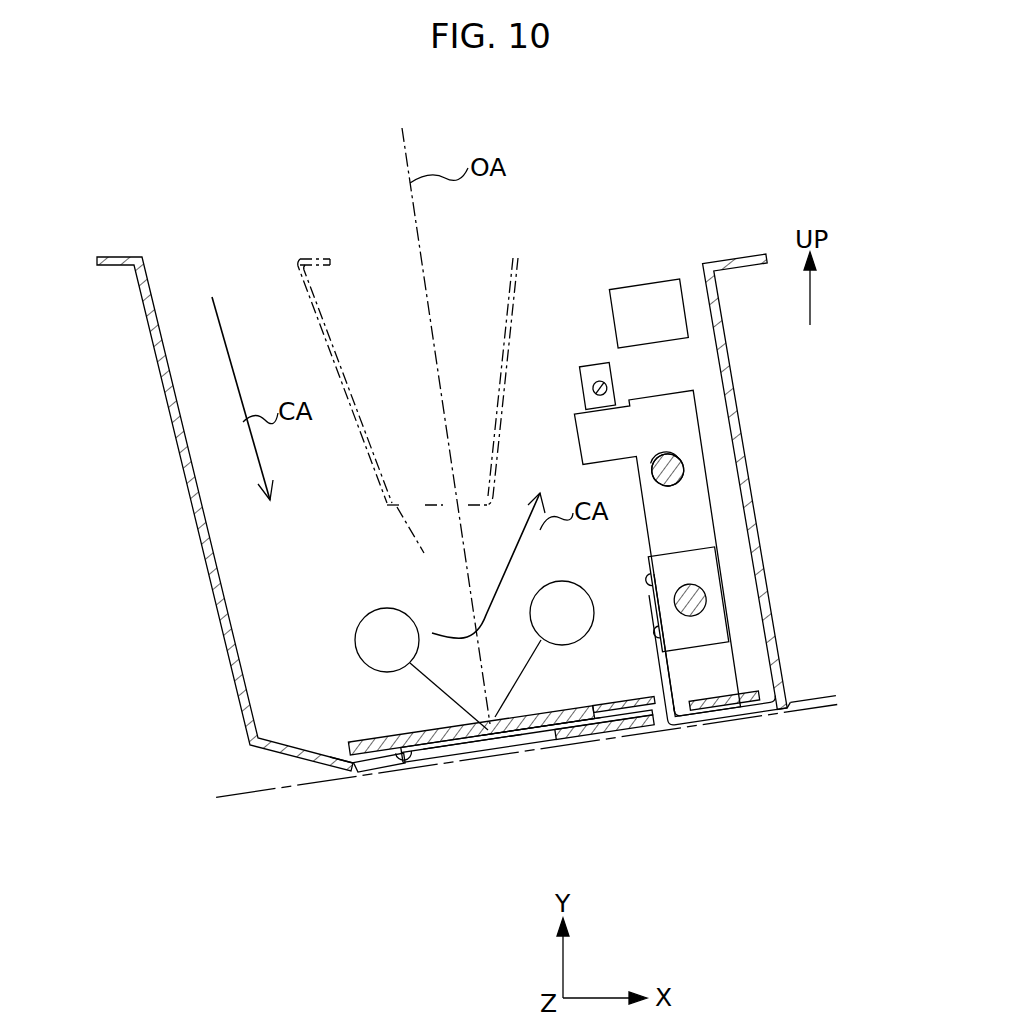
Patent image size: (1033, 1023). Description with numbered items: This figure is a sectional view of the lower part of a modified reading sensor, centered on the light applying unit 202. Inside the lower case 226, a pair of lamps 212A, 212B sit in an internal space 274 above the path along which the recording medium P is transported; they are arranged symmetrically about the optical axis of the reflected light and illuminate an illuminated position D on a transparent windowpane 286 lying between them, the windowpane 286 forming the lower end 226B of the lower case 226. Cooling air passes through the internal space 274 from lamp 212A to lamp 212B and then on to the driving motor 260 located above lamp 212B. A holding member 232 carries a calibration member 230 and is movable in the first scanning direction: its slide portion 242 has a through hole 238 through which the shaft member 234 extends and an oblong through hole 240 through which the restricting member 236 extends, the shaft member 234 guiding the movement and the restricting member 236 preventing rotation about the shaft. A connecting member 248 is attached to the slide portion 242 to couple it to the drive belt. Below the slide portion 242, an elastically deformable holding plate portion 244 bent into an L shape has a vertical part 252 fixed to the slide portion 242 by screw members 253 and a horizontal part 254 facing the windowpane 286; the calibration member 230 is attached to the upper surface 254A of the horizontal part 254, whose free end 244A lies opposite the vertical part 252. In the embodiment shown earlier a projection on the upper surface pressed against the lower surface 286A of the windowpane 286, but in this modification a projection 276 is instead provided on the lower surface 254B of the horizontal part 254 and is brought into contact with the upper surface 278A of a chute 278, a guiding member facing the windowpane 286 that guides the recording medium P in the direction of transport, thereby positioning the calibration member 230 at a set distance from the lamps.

The light applying unit 202 is at (760, 195).
The lower case 226 is at (207, 575).
The lower end of the lower case 226B is at (350, 773).
The lamp 212A is at (355, 640).
The lamp 212B is at (565, 582).
The internal space 274 is at (426, 591).
The illuminated position D is at (492, 735).
The holding member 232 is at (700, 400).
The vertical part 252 is at (673, 678).
The slide portion 242 is at (717, 535).
The through hole 238 is at (702, 605).
The screw members 253 is at (643, 585).
The restricting member 236 is at (667, 442).
The through hole 240 is at (688, 470).
The shaft member 234 is at (702, 615).
The driving motor 260 is at (648, 282).
The connecting member 248 is at (593, 368).
The calibration member 230 is at (412, 733).
The windowpane 286 is at (633, 726).
The horizontal part 254 is at (493, 740).
The upper surface 254A is at (530, 736).
The lower surface 254B is at (472, 752).
The holding plate portion 244 is at (607, 737).
The free end 244A is at (395, 760).
The lower surface of the windowpane 286A is at (362, 777).
The projection 276 is at (408, 764).
The recording medium P is at (787, 703).
The chute 278 is at (815, 697).
The upper surface of the chute 278A is at (785, 705).